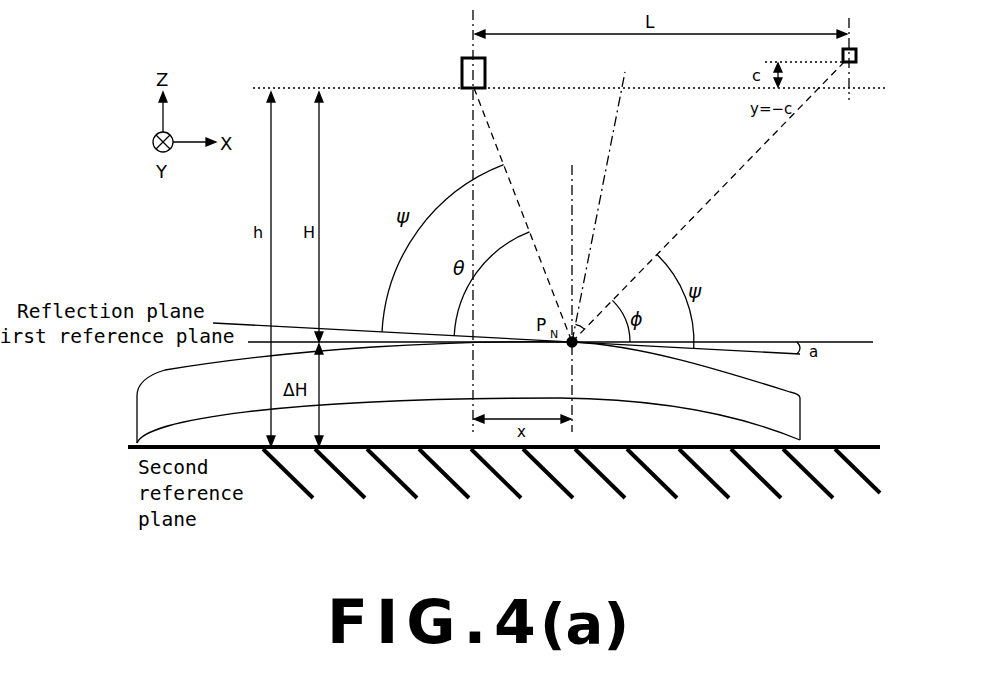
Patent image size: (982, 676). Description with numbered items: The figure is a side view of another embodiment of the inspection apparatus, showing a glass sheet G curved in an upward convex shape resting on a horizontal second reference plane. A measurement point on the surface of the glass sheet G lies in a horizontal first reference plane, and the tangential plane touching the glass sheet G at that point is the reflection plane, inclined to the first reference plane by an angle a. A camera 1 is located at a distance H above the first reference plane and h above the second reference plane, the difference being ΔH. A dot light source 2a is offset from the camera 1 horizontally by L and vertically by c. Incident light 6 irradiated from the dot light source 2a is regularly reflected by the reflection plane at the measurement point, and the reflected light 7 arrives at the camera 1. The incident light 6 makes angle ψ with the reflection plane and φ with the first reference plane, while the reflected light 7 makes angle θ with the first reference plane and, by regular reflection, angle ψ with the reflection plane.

The camera 1 is at (486, 70).
The dot light source 2a is at (857, 50).
The incident light 6 is at (718, 197).
The reflected light 7 is at (516, 194).
The glass sheet G is at (793, 392).